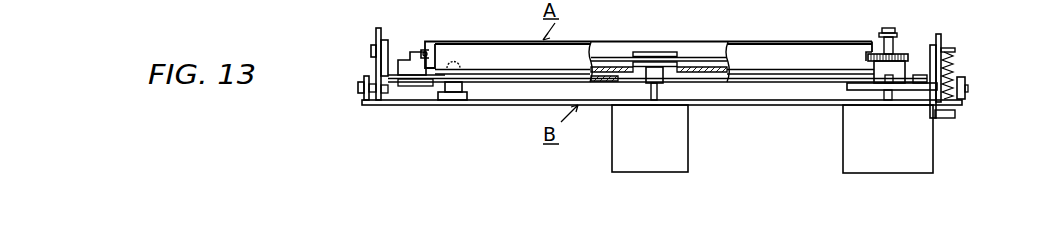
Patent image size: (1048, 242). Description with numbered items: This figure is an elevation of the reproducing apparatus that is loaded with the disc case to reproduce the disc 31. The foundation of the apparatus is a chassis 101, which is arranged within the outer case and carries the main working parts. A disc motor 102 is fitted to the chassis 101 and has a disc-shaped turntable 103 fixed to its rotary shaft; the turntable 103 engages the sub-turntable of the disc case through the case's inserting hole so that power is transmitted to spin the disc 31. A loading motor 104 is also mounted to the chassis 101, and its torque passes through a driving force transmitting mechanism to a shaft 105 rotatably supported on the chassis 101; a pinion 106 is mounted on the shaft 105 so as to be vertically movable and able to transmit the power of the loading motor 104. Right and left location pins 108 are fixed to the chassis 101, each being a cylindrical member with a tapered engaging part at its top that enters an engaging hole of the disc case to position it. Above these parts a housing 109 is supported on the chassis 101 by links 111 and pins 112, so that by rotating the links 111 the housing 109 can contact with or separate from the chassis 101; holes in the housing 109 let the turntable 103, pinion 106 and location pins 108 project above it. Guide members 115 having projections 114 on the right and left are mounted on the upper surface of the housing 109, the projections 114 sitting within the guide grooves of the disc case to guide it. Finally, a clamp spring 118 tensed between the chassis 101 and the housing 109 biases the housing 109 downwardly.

The disc 31 is at (613, 57).
The chassis 101 is at (398, 105).
The disc motor 102 is at (684, 134).
The turntable 103 is at (667, 53).
The loading motor 104 is at (932, 129).
The shaft 105 is at (887, 26).
The pinion 106 is at (902, 51).
The location pin 108 is at (464, 88).
The housing 109 is at (490, 72).
The link 111 is at (377, 68).
The pin 112 is at (371, 50).
The projection 114 is at (419, 51).
The guide member 115 is at (408, 53).
The clamp spring 118 is at (952, 67).